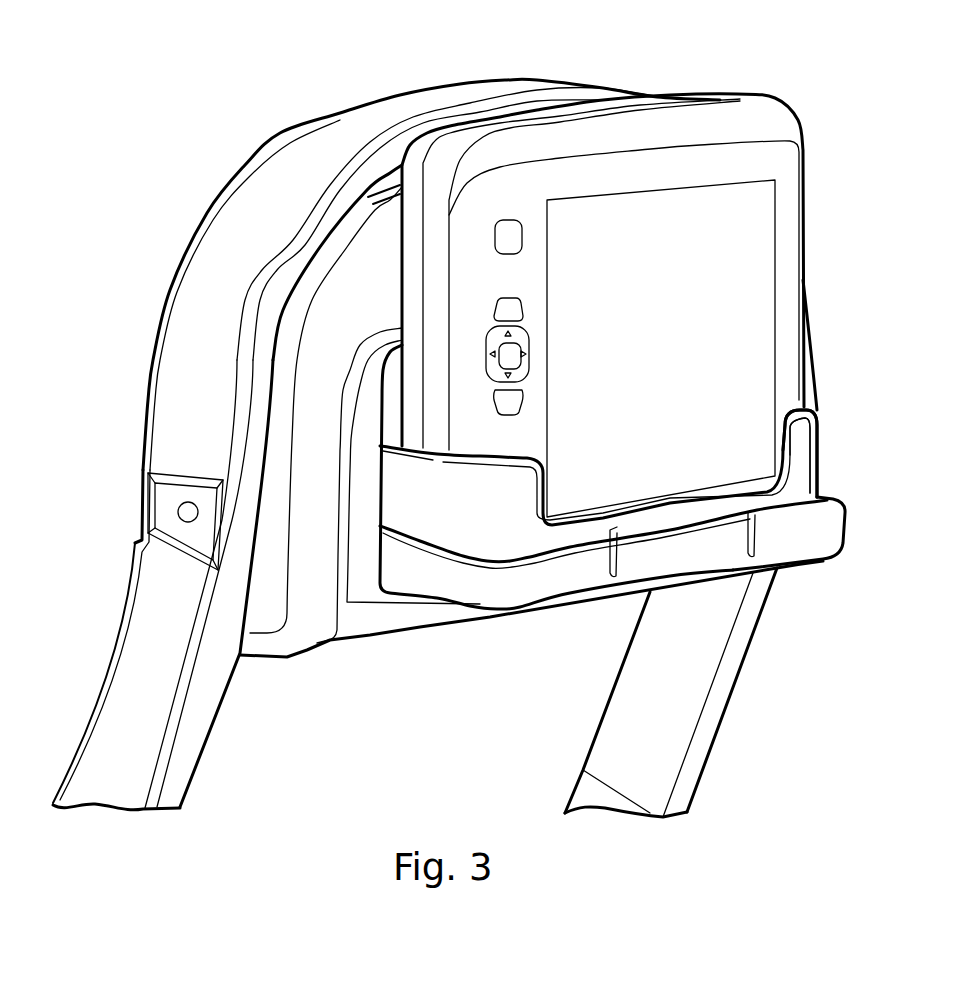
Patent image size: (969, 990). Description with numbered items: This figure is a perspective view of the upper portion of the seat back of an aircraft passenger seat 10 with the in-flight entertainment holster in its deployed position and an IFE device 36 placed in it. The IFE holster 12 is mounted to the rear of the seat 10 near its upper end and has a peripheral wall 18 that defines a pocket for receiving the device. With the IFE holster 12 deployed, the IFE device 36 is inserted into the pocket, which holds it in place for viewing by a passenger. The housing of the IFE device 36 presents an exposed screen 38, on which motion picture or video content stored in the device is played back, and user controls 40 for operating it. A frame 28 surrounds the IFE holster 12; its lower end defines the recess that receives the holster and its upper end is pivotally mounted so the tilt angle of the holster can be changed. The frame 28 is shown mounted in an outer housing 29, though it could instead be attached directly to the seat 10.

The aircraft passenger seat 10 is at (272, 108).
The IFE holster 12 is at (833, 443).
The peripheral wall 18 is at (807, 463).
The frame 28 is at (388, 617).
The outer housing 29 is at (296, 633).
The IFE device 36 is at (725, 112).
The screen 38 is at (675, 324).
The user controls 40 is at (478, 314).